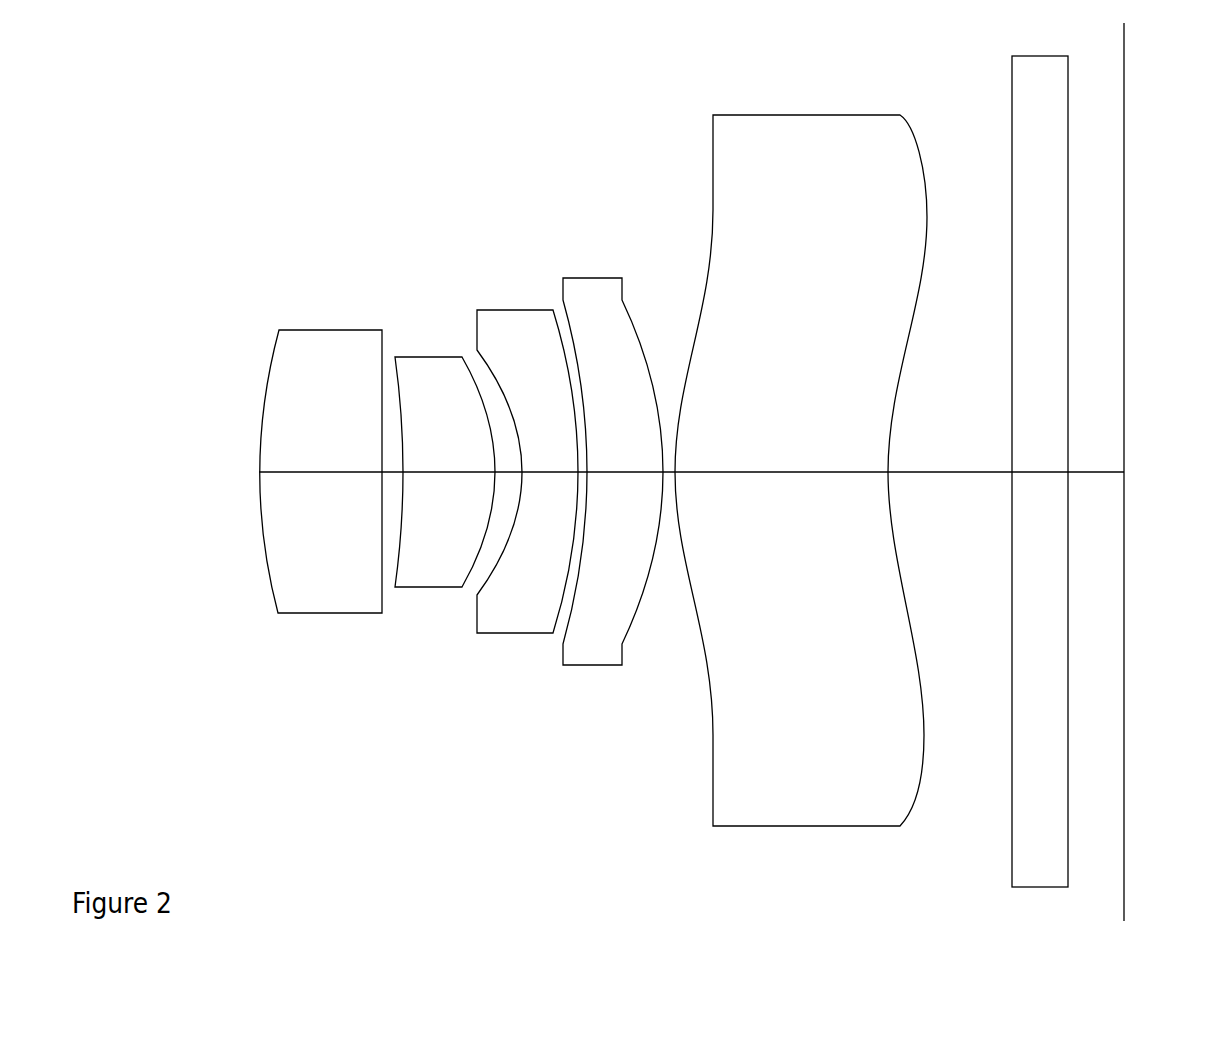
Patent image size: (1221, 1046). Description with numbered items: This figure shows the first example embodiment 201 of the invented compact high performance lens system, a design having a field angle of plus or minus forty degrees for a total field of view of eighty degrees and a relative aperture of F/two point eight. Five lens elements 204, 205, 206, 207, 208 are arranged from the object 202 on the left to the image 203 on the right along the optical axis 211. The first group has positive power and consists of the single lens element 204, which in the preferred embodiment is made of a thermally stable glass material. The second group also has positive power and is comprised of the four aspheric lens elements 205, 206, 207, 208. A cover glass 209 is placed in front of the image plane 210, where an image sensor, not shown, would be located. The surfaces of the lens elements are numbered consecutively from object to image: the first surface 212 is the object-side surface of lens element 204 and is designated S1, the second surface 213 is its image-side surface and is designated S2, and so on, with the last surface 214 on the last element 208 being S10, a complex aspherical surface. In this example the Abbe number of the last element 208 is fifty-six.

The first example embodiment 201 is at (511, 872).
The object 202 is at (201, 412).
The image 203 is at (1199, 414).
The lens element 204 is at (313, 345).
The aspheric lens element 205 is at (420, 372).
The aspheric lens element 206 is at (504, 328).
The aspheric lens element 207 is at (580, 306).
The last element 208 is at (751, 212).
The cover glass 209 is at (1024, 114).
The image plane 210 is at (1132, 128).
The optical axis 211 is at (320, 484).
The first surface 212 is at (250, 572).
The second surface 213 is at (398, 604).
The last surface 214 is at (943, 659).